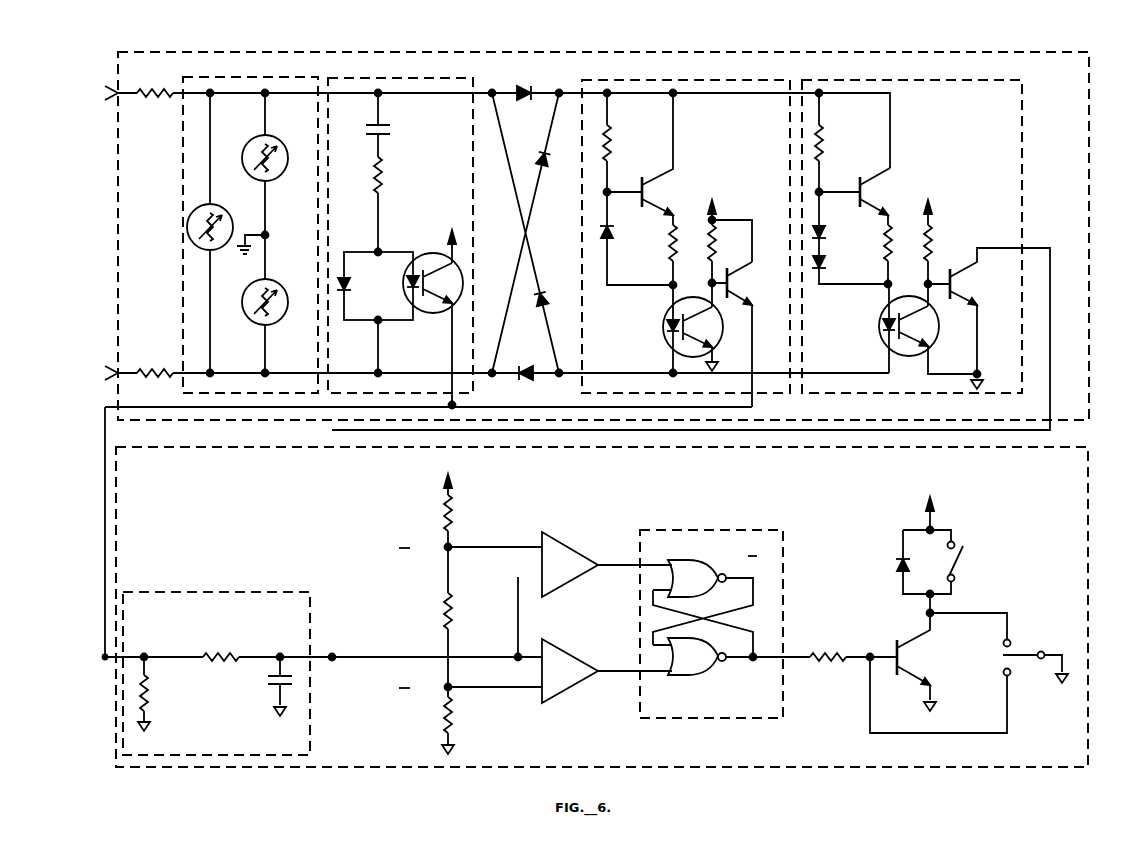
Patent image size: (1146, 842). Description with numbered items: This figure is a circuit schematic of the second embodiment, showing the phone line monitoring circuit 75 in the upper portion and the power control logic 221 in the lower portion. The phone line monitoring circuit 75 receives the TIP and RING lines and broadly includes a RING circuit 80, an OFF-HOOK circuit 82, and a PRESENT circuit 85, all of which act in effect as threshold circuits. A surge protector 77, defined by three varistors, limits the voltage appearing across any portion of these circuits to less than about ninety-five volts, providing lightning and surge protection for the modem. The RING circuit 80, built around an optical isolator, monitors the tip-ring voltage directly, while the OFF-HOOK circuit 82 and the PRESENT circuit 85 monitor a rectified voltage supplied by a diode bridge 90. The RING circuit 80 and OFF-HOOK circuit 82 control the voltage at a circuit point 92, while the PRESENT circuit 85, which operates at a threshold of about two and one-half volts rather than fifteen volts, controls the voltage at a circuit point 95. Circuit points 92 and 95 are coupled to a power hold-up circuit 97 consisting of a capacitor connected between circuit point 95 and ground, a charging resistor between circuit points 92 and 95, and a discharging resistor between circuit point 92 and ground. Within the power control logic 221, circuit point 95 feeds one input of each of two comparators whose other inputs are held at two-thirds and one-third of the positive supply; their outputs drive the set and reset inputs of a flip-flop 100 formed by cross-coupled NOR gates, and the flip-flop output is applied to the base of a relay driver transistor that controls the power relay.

The phone line monitoring circuit 75 is at (1089, 68).
The surge protector 77 is at (297, 78).
The RING circuit 80 is at (455, 78).
The OFF-HOOK circuit 82 is at (768, 80).
The PRESENT circuit 85 is at (1003, 80).
The diode bridge 90 is at (529, 88).
The circuit point 92 is at (105, 652).
The circuit point 95 is at (333, 661).
The power hold-up circuit 97 is at (262, 592).
The flip-flop 100 is at (762, 531).
The power control logic 221 is at (1088, 468).